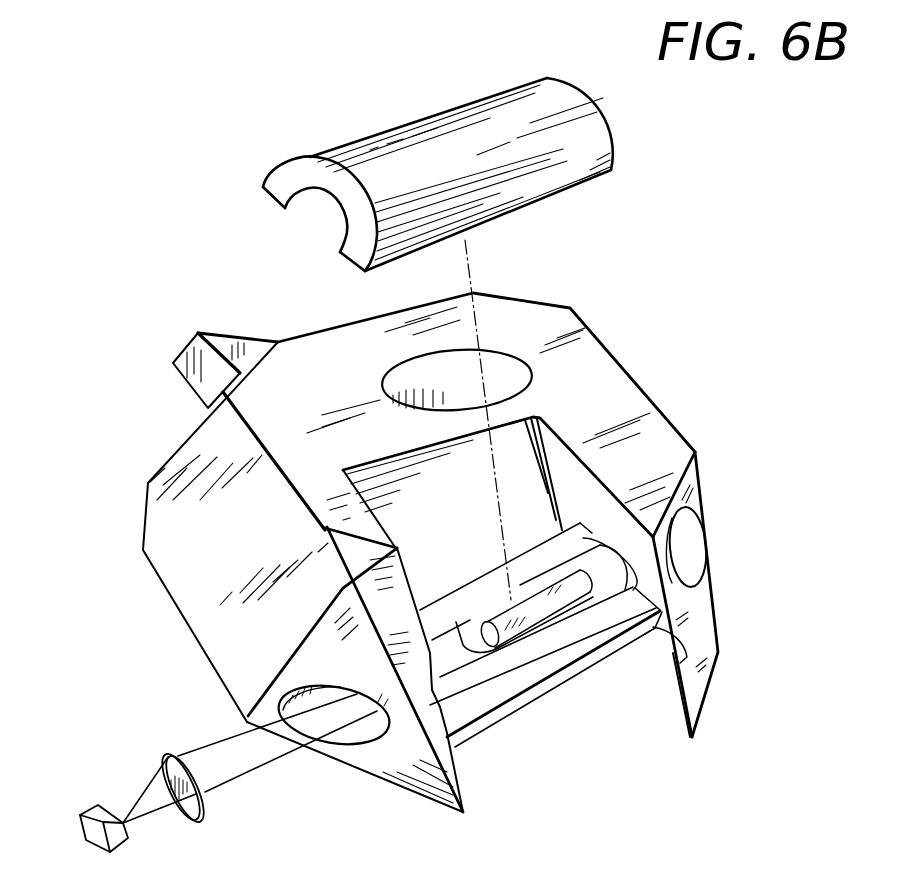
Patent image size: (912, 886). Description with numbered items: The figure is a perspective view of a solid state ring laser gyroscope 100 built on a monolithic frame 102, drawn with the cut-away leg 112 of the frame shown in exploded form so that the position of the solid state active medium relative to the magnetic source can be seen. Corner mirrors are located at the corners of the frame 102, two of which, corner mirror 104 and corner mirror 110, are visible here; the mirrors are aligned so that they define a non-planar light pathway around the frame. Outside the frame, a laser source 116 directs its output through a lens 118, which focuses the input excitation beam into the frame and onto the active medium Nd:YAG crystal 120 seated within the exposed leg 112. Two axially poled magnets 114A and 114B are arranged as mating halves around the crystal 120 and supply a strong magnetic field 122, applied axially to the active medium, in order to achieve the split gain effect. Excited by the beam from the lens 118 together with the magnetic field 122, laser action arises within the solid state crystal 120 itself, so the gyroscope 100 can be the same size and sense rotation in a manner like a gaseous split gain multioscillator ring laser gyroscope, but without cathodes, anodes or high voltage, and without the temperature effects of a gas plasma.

The solid state ring laser gyroscope 100 is at (668, 338).
The monolithic frame 102 is at (192, 578).
The corner mirror 104 is at (700, 542).
The corner mirror 110 is at (345, 730).
The leg 112 is at (598, 563).
The axially poled magnet 114A is at (617, 141).
The axially poled magnet 114B is at (493, 683).
The laser source 116 is at (92, 832).
The lens 118 is at (170, 764).
The active medium Nd:YAG crystal 120 is at (545, 605).
The magnetic field 122 is at (508, 617).